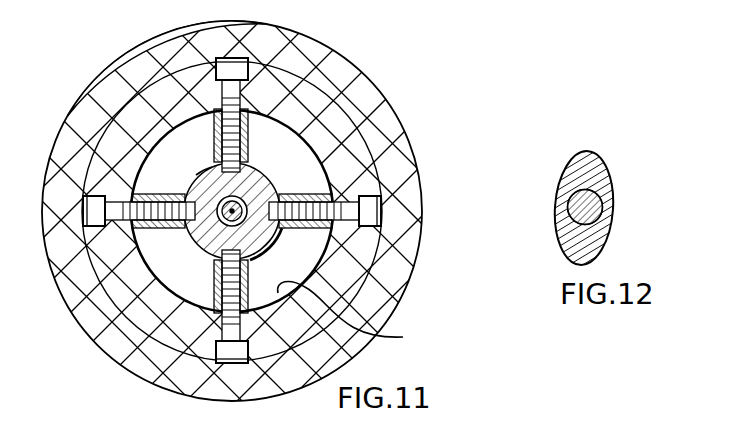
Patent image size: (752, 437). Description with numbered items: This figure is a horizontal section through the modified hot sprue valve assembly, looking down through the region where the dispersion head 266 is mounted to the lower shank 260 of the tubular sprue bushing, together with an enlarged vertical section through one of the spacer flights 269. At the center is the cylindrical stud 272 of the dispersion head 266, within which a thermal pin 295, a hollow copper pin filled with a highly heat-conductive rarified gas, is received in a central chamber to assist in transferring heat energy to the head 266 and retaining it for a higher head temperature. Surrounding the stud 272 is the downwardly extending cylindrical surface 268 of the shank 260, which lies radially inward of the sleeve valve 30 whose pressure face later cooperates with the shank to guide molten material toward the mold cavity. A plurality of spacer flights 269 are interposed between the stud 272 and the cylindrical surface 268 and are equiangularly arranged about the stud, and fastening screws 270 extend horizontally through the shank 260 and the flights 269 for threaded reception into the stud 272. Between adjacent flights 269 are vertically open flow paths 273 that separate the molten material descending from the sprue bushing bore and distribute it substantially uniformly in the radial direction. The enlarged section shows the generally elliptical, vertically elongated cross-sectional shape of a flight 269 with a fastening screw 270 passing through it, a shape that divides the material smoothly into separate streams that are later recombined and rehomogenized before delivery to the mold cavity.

In FIG. 11, the sleeve valve 30 is at (407, 163).
In FIG. 11, the lower shank 260 is at (363, 268).
In FIG. 11, the dispersion head 266 is at (262, 168).
In FIG. 11, the cylindrical surface 268 is at (368, 315).
In FIG. 11, the spacer flights 269 is at (290, 229).
In FIG. 12, the spacer flights 269 is at (588, 163).
In FIG. 11, the fastening screws 270 is at (384, 212).
In FIG. 12, the fastening screws 270 is at (590, 210).
In FIG. 11, the cylindrical stud 272 is at (204, 181).
In FIG. 11, the flow paths 273 is at (300, 162).
In FIG. 11, the thermal pin 295 is at (198, 243).